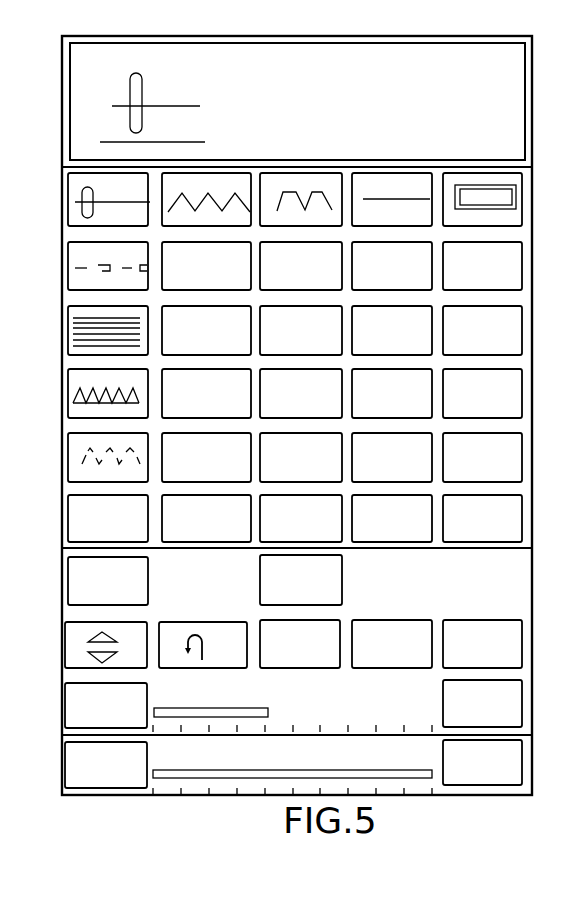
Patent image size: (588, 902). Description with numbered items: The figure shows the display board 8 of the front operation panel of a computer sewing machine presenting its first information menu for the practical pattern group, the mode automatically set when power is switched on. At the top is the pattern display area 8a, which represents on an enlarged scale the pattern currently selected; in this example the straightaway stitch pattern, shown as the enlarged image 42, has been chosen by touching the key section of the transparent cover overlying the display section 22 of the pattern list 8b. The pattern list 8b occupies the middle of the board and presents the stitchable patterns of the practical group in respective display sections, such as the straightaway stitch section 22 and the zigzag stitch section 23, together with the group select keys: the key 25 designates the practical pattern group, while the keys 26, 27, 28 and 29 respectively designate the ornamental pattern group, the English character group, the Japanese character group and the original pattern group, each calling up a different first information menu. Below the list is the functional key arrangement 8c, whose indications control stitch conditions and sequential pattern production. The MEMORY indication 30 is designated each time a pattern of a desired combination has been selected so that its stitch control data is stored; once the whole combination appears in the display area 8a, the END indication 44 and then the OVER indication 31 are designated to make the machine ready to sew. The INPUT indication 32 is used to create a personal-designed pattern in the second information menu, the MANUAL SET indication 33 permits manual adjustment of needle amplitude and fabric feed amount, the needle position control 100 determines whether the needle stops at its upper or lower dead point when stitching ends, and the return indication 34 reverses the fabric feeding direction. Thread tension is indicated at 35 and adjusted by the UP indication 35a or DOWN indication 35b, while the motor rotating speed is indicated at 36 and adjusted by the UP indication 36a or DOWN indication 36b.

The display board 8 is at (482, 32).
The pattern display area 8a is at (517, 88).
The pattern list 8b is at (523, 382).
The functional key arrangement 8c is at (532, 632).
The display section 22 is at (76, 183).
The display section 23 is at (203, 186).
The key 25 is at (70, 508).
The pattern group select key 26 is at (200, 497).
The pattern group select key 27 is at (297, 497).
The pattern group select key 28 is at (387, 497).
The pattern group select key 29 is at (475, 497).
The MEMORY indication 30 is at (342, 573).
The OVER indication 31 is at (503, 619).
The INPUT indication 32 is at (422, 619).
The MANUAL SET indication 33 is at (262, 622).
The return indication 34 is at (170, 660).
The thread tension indication 35 is at (273, 697).
The UP indication 35a is at (513, 693).
The DOWN indication 35b is at (70, 702).
The rotating speed indication 36 is at (242, 762).
The UP indication 36a is at (517, 762).
The DOWN indication 36b is at (67, 753).
The displayed stitch pattern 42 is at (195, 141).
The END indication 44 is at (72, 596).
The needle position control 100 is at (70, 652).